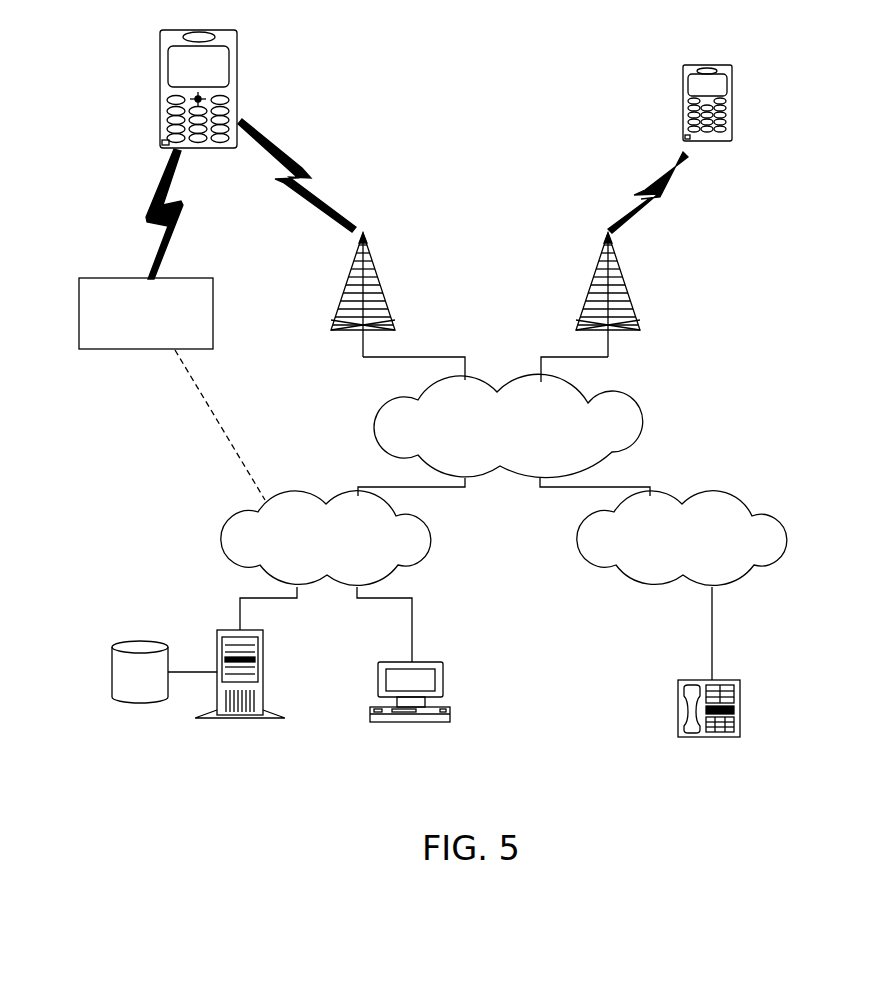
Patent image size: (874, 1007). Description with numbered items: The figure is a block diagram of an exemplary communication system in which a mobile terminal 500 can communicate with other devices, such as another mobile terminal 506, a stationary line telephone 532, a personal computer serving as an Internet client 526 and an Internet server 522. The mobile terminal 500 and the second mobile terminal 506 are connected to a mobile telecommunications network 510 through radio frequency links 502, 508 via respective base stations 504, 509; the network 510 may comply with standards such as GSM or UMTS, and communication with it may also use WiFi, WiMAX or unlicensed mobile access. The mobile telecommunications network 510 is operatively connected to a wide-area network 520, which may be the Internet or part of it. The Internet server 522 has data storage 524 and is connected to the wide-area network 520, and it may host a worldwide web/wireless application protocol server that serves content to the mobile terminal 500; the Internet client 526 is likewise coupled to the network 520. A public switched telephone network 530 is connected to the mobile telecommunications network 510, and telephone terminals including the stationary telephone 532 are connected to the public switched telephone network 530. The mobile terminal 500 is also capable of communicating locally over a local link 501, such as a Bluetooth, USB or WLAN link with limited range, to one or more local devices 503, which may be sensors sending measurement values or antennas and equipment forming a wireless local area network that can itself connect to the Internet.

The mobile terminal 500 is at (158, 98).
The local link 501 is at (146, 212).
The radio frequency link 502 is at (300, 167).
The local devices 503 is at (112, 352).
The base station 504 is at (360, 281).
The mobile terminal 506 is at (693, 63).
The radio frequency link 508 is at (634, 192).
The base station 509 is at (587, 295).
The mobile telecommunications network 510 is at (375, 422).
The wide-area network 520 is at (236, 519).
The Internet server 522 is at (216, 655).
The data storage 524 is at (121, 653).
The personal computer (Internet client) 526 is at (429, 662).
The public switched telephone network 530 is at (786, 540).
The stationary telephone 532 is at (677, 700).